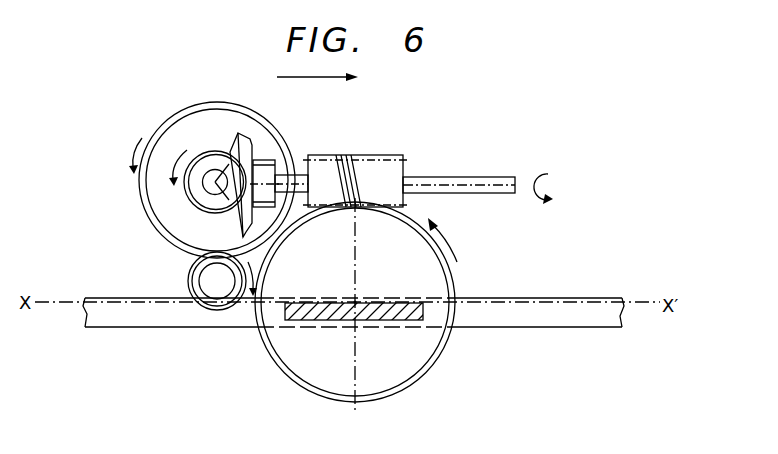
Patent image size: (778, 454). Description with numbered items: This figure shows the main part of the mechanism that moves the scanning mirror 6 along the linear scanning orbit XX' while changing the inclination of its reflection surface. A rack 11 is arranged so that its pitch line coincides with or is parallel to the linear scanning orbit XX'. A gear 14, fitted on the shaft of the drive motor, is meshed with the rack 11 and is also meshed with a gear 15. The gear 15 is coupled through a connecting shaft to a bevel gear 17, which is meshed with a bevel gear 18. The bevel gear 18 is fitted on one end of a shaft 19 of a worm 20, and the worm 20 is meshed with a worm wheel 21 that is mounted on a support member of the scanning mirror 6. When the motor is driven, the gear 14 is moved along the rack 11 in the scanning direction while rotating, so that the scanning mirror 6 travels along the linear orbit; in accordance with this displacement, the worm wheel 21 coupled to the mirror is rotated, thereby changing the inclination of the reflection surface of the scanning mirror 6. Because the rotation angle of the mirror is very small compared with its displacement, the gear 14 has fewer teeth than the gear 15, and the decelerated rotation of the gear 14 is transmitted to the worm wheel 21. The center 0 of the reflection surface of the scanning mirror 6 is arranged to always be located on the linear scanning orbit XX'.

The center of the reflection surface 0 is at (355, 300).
The scanning mirror 6 is at (374, 303).
The rack 11 is at (572, 328).
The gear 14 is at (188, 272).
The gear 15 is at (167, 125).
The bevel gear 17 is at (183, 203).
The bevel gear 18 is at (239, 132).
The shaft 19 is at (297, 172).
The worm 20 is at (370, 155).
The worm wheel 21 is at (450, 340).